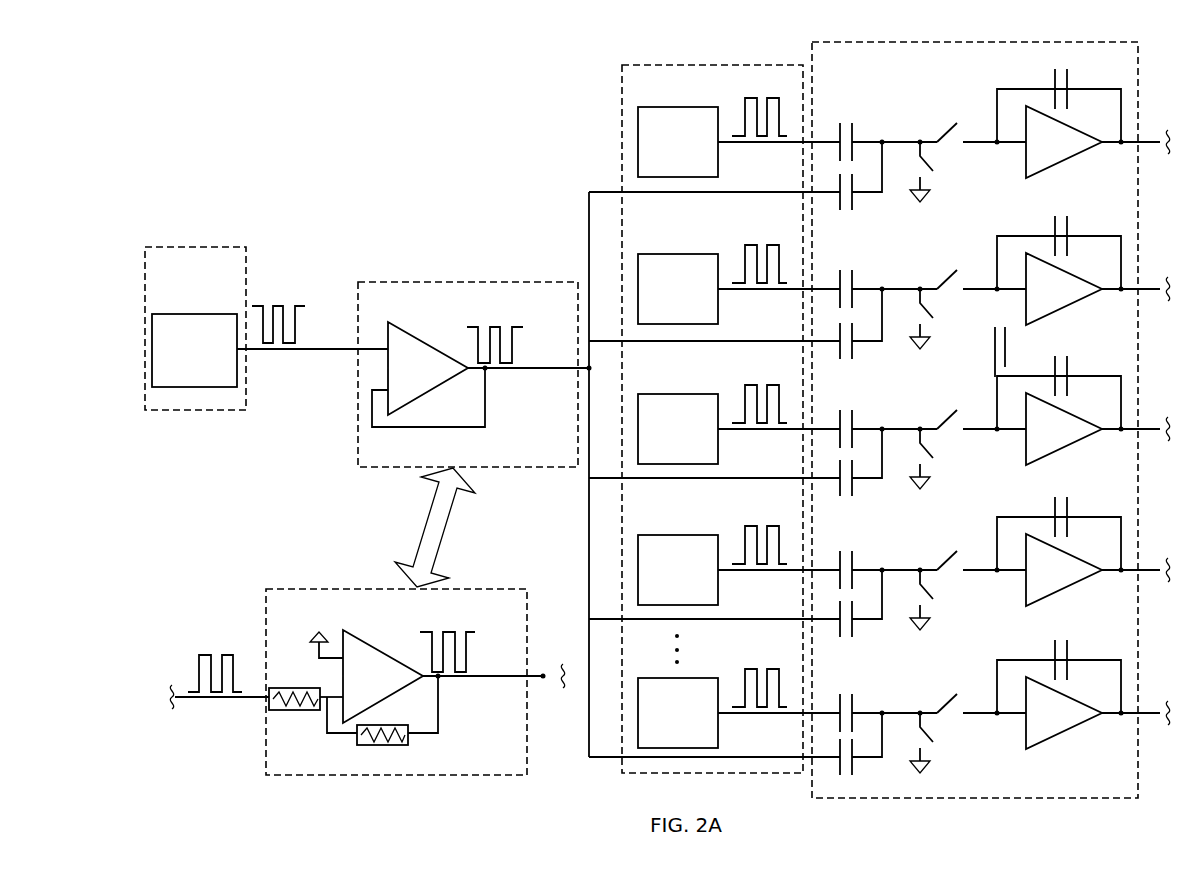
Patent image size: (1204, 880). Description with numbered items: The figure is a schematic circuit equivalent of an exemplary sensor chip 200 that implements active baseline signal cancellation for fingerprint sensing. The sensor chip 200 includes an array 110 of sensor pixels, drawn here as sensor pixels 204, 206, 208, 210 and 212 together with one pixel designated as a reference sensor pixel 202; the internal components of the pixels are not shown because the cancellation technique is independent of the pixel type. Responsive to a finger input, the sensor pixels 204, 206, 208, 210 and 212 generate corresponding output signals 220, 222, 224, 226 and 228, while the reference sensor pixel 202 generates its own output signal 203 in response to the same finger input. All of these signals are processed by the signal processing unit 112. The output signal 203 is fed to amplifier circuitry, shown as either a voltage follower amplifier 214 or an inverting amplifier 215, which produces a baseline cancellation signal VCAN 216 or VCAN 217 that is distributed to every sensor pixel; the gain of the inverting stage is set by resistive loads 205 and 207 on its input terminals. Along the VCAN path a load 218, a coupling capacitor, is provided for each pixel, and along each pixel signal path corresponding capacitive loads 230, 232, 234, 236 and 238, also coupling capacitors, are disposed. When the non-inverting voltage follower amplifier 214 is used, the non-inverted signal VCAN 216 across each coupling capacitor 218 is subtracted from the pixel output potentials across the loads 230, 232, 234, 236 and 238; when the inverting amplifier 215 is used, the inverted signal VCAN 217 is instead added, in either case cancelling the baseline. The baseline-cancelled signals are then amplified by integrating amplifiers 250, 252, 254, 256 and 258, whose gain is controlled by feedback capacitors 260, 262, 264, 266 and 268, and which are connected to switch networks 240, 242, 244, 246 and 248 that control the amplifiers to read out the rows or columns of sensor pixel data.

The sensor chip 200 is at (355, 137).
The array of sensor pixels 110 is at (190, 246).
The signal processing unit 112 is at (423, 282).
The reference sensor pixel 202 is at (164, 317).
The output signal 203 is at (298, 308).
The voltage follower amplifier 214 is at (401, 340).
The inverting amplifier 215 is at (358, 646).
The baseline cancellation signal VCAN 216 is at (518, 327).
The baseline cancellation signal VCAN 217 is at (471, 633).
The resistive load 205 is at (278, 688).
The resistive load 207 is at (395, 742).
The sensor pixel 204 is at (641, 107).
The sensor pixel 206 is at (678, 274).
The sensor pixel 208 is at (678, 414).
The sensor pixel 210 is at (678, 555).
The sensor pixel 212 is at (677, 697).
The output signal 220 is at (745, 102).
The output signal 222 is at (742, 253).
The output signal 224 is at (742, 393).
The output signal 226 is at (742, 534).
The output signal 228 is at (742, 677).
The load 218 is at (853, 199).
The load 230 is at (853, 134).
The load 232 is at (860, 278).
The load 234 is at (860, 418).
The load 236 is at (860, 559).
The load 238 is at (860, 702).
The switch network 240 is at (920, 140).
The switch network 242 is at (933, 297).
The switch network 244 is at (933, 437).
The switch network 246 is at (933, 578).
The switch network 248 is at (933, 721).
The integrating amplifier 250 is at (1070, 155).
The integrating amplifier 252 is at (1069, 293).
The integrating amplifier 254 is at (1069, 433).
The integrating amplifier 256 is at (1069, 574).
The integrating amplifier 258 is at (1069, 717).
The feedback capacitor 260 is at (1054, 80).
The feedback capacitor 262 is at (1059, 240).
The feedback capacitor 264 is at (1048, 378).
The feedback capacitor 266 is at (1059, 521).
The feedback capacitor 268 is at (1059, 664).